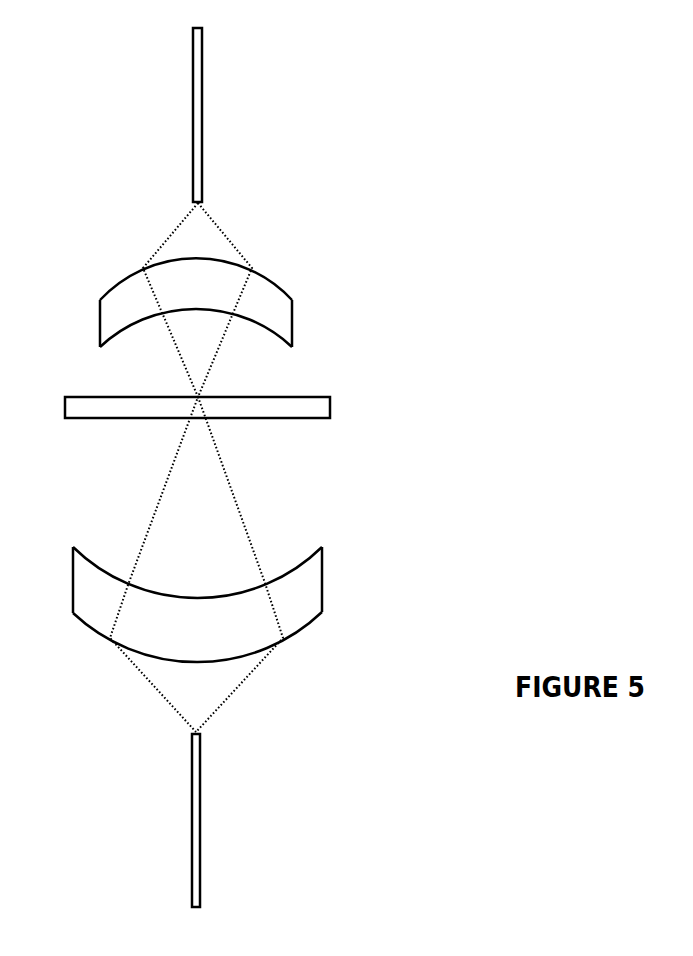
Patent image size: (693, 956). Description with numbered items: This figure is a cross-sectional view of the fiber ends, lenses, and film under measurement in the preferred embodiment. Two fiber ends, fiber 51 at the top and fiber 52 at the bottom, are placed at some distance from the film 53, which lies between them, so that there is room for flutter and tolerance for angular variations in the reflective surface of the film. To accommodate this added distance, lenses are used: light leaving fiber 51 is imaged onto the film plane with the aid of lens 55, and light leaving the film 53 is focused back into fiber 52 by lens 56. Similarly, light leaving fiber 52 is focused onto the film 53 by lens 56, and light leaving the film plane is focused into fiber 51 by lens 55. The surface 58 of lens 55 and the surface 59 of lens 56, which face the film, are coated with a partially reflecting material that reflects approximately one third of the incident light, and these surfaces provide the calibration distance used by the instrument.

The fiber 51 is at (201, 98).
The fiber 52 is at (200, 808).
The film 53 is at (330, 397).
The lens 55 is at (287, 325).
The lens 56 is at (315, 583).
The surface of lens 55 58 is at (138, 323).
The surface of lens 56 59 is at (100, 570).